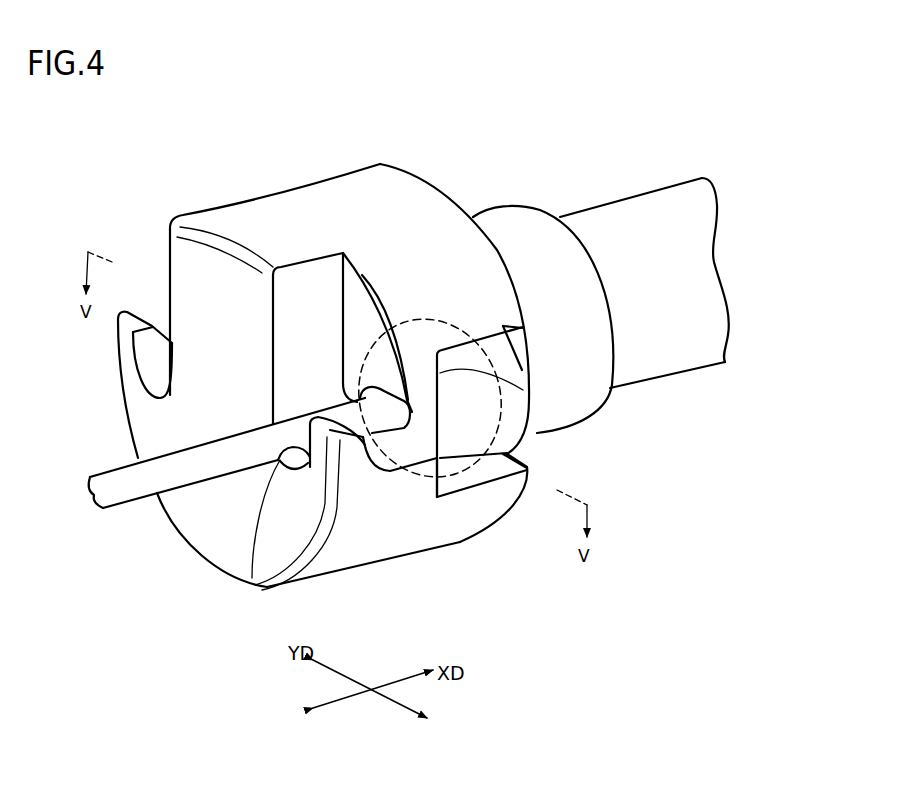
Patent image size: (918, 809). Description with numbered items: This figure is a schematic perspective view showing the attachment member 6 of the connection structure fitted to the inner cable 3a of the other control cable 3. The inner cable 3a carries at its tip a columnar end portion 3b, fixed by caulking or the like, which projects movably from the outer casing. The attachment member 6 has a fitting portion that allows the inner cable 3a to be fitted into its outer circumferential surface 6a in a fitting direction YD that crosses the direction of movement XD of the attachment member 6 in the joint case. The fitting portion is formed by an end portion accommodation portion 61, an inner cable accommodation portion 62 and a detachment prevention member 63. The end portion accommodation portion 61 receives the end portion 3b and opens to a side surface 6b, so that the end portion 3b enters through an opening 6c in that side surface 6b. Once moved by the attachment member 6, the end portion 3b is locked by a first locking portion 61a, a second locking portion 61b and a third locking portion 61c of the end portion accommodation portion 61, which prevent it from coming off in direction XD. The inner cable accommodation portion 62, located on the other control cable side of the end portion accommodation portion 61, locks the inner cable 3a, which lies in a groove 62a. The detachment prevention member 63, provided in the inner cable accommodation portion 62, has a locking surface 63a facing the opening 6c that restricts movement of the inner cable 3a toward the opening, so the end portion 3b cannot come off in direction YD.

The other control cable 3 is at (123, 483).
The inner cable 3a is at (388, 382).
The end portion 3b is at (485, 421).
The attachment member 6 is at (432, 150).
The outer circumferential surface 6a is at (503, 322).
The side surface 6b is at (480, 497).
The opening 6c is at (527, 478).
The end portion accommodation portion 61 is at (500, 468).
The first locking portion 61a is at (503, 457).
The second locking portion 61b is at (441, 460).
The third locking portion 61c is at (525, 335).
The inner cable accommodation portion 62 is at (418, 450).
The groove 62a is at (392, 457).
The detachment prevention member 63 is at (356, 448).
The locking surface 63a is at (252, 578).